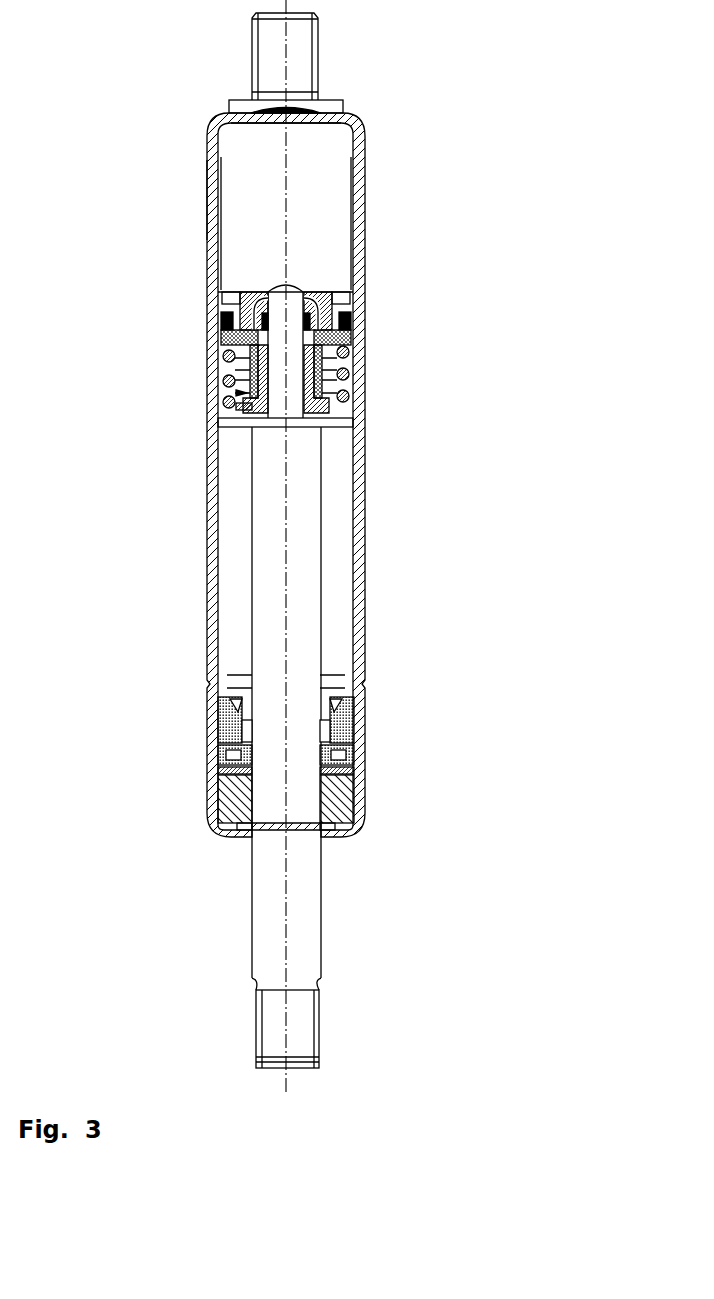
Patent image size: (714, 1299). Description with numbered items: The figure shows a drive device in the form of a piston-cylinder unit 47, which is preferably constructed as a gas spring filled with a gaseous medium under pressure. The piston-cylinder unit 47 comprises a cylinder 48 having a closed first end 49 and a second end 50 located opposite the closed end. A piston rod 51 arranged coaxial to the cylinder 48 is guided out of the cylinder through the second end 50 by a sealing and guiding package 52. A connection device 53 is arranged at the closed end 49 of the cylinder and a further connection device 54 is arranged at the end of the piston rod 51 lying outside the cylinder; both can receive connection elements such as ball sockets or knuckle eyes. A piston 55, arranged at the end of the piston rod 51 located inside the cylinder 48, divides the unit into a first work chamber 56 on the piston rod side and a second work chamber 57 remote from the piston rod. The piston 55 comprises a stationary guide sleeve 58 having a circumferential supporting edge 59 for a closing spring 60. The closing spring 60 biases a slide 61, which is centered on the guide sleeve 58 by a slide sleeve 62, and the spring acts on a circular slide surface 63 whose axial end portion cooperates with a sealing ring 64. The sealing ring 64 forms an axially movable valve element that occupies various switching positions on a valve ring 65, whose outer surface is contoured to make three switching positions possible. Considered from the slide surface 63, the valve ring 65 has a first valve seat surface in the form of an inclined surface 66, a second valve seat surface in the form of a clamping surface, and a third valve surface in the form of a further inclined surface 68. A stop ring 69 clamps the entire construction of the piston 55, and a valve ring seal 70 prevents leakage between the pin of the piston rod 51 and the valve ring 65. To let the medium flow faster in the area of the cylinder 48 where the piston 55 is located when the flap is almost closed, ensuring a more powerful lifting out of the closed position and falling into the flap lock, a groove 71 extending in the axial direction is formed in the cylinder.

The piston-cylinder unit 47 is at (488, 175).
The cylinder 48 is at (362, 580).
The closed first end 49 is at (342, 118).
The second end 50 is at (360, 815).
The piston rod 51 is at (318, 930).
The sealing and guiding package 52 is at (403, 763).
The connection device 53 is at (305, 33).
The connection device 54 is at (312, 1030).
The piston 55 is at (369, 370).
The first work chamber 56 is at (345, 640).
The second work chamber 57 is at (225, 157).
The guide sleeve 58 is at (240, 428).
The supporting edge 59 is at (240, 410).
The closing spring 60 is at (226, 385).
The slide 61 is at (236, 394).
The slide sleeve 62 is at (350, 380).
The slide surface 63 is at (226, 345).
The sealing ring 64 is at (350, 316).
The valve ring 65 is at (219, 310).
The inclined surface 66 is at (350, 340).
The inclined surface 68 is at (350, 300).
The stop ring 69 is at (316, 290).
The valve ring seal 70 is at (265, 290).
The groove 71 is at (214, 205).